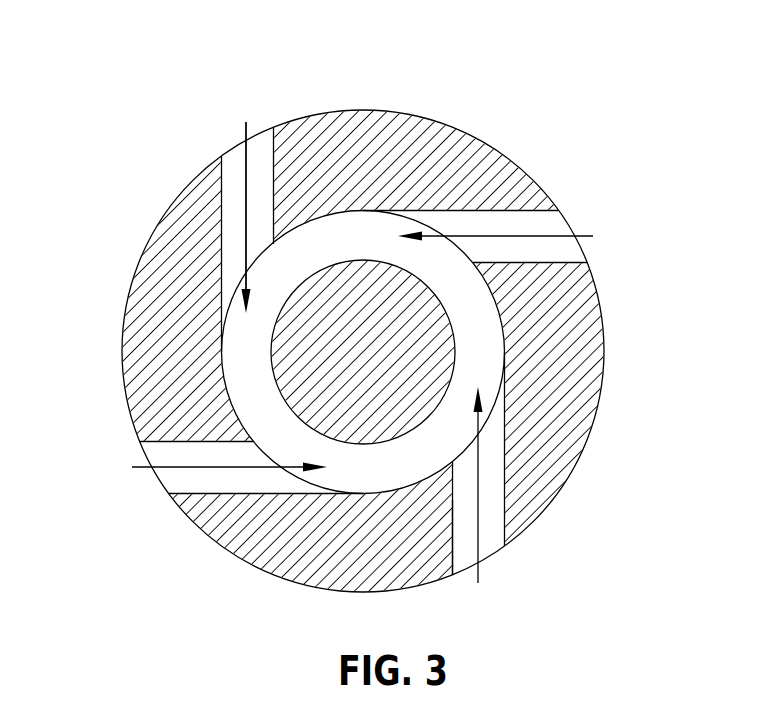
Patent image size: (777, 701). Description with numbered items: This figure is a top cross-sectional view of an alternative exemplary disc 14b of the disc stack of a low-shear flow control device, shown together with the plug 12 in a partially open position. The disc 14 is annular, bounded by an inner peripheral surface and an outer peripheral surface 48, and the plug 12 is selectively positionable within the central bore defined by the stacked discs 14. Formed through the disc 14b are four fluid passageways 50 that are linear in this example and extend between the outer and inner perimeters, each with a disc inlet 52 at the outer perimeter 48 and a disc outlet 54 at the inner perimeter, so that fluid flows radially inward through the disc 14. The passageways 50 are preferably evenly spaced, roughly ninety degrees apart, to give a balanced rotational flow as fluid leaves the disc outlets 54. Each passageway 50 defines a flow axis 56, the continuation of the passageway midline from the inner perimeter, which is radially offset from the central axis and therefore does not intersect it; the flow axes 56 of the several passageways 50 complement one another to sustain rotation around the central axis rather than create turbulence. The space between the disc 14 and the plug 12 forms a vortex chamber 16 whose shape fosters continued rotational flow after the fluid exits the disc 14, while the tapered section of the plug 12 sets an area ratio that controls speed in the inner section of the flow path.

The plug 12 is at (463, 354).
The disc 14 is at (365, 346).
The disc 14b is at (471, 160).
The vortex chamber 16 is at (477, 303).
The outer peripheral surface 48 is at (349, 110).
The fluid passageway 50 is at (229, 141).
The disc inlet 52 is at (477, 556).
The disc outlet 54 is at (462, 468).
The flow axis 56 is at (246, 367).